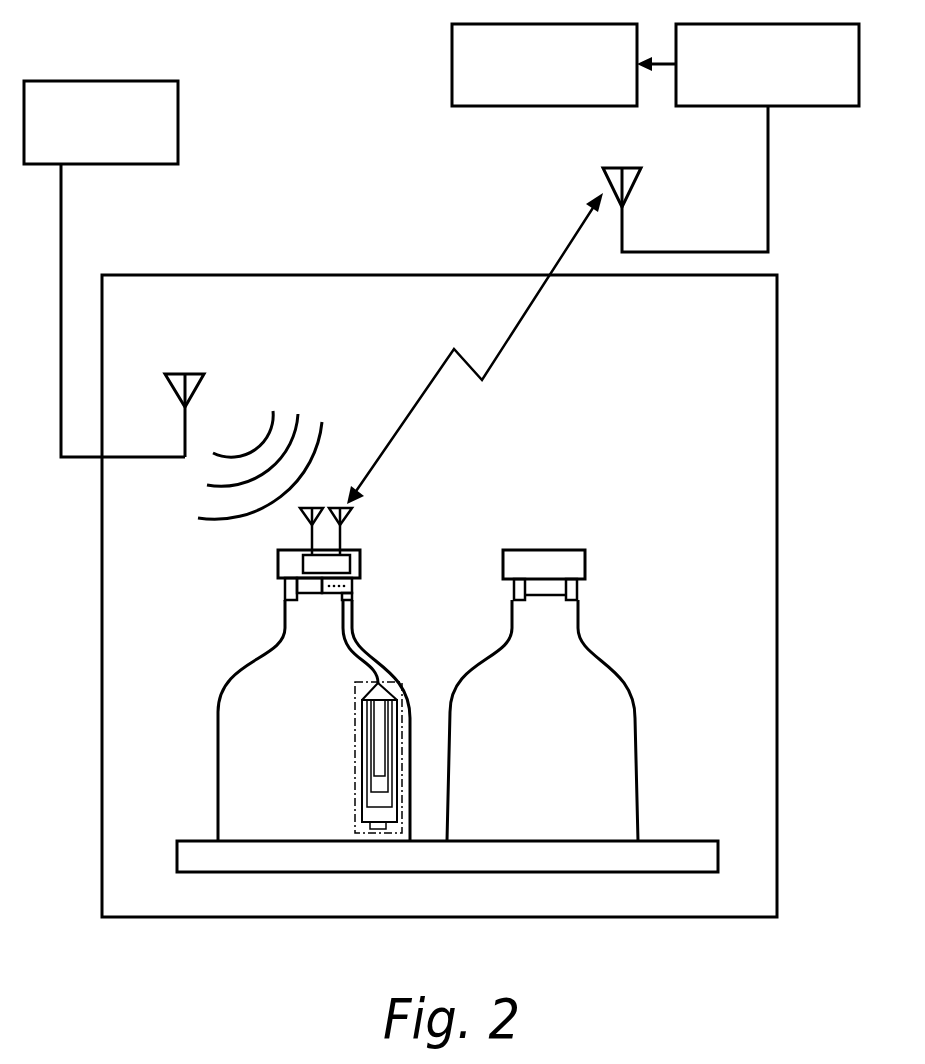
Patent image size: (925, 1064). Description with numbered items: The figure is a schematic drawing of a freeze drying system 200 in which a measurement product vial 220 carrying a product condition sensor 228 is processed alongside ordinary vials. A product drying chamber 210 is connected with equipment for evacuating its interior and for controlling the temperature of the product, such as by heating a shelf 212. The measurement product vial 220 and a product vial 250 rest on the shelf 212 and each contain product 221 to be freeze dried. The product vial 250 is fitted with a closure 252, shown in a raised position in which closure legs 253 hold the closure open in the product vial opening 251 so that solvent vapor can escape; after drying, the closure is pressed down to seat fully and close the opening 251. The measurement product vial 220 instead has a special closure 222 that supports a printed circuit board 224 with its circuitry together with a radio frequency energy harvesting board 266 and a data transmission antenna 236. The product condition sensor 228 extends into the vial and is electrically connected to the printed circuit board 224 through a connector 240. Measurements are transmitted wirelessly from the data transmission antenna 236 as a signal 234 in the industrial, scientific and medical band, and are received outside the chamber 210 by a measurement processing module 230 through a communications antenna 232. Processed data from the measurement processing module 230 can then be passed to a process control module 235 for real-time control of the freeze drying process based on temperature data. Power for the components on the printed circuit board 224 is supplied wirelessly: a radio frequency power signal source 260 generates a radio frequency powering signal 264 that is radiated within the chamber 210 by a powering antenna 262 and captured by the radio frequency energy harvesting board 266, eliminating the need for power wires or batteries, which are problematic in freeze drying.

The freeze drying system 200 is at (249, 56).
The product drying chamber 210 is at (243, 275).
The shelf 212 is at (673, 841).
The measurement product vial 220 is at (246, 657).
The product 221 is at (302, 824).
The special closure 222 is at (361, 564).
The printed circuit board 224 is at (303, 565).
The product condition sensor 228 is at (362, 724).
The measurement processing module 230 is at (741, 106).
The communications antenna 232 is at (603, 172).
The signal 234 is at (512, 331).
The process control module 235 is at (492, 106).
The data transmission antenna 236 is at (348, 517).
The connector 240 is at (355, 586).
The product vial 250 is at (470, 657).
The product vial opening 251 is at (550, 600).
The closure 252 is at (588, 564).
The closure legs 253 is at (580, 587).
The radio frequency power signal source 260 is at (178, 147).
The powering antenna 262 is at (197, 393).
The radio frequency powering signal 264 is at (210, 503).
The radio frequency energy harvesting board 266 is at (303, 516).